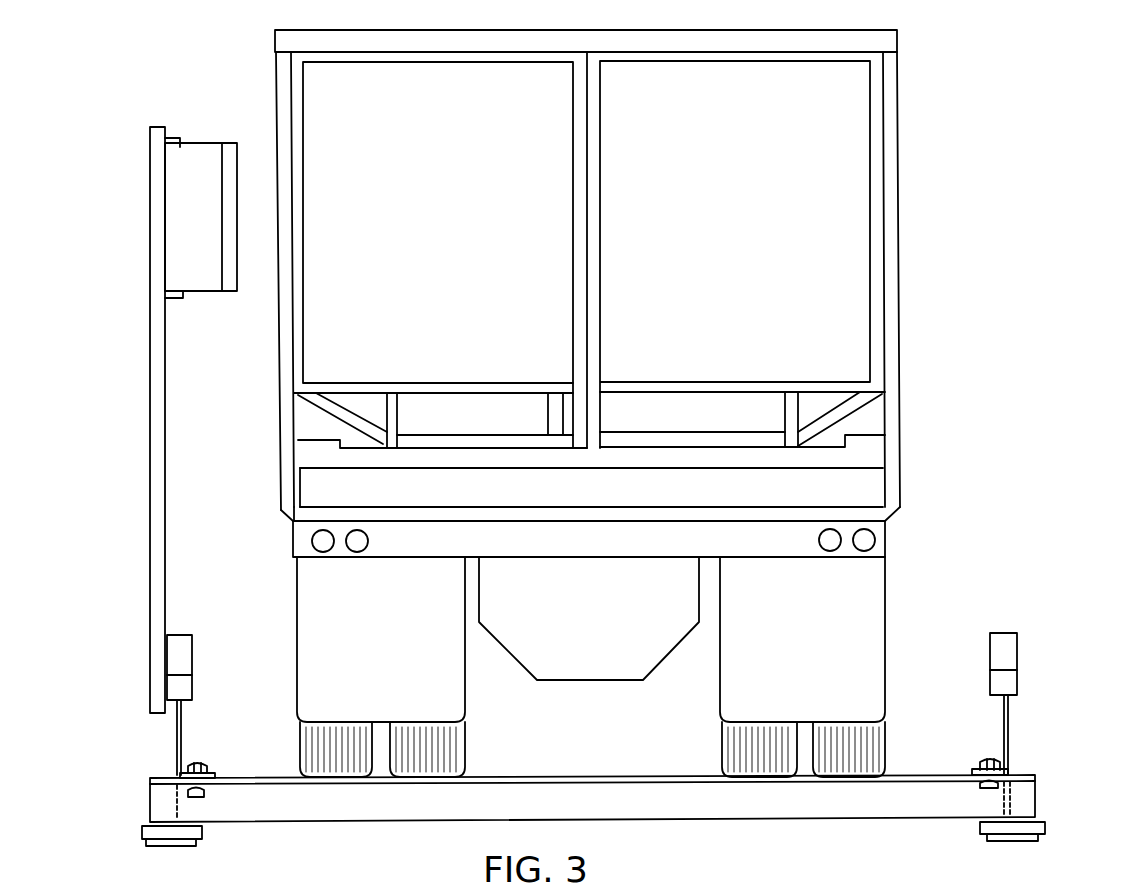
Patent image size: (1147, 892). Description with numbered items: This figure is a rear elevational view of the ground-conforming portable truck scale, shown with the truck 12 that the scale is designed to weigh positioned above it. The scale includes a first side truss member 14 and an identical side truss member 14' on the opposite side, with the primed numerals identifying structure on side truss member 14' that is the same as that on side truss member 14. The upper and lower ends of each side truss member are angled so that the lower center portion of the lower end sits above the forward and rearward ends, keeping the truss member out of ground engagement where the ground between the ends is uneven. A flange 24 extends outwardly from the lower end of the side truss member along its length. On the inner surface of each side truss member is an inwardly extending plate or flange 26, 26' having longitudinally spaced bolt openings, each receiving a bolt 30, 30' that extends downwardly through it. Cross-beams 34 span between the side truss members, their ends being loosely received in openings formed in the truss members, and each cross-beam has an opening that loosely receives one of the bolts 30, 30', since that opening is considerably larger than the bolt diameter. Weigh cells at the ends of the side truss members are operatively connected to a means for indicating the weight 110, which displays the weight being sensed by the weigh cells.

The truck 12 is at (922, 323).
The means for indicating the weight 110 is at (235, 172).
The first side truss member 14 is at (1053, 724).
The side truss member 14' is at (225, 726).
The bolt 30 is at (956, 742).
The bolt 30' is at (230, 751).
The inwardly extending plate or flange 26 is at (949, 751).
The inwardly extending plate or flange 26' is at (237, 756).
The cross-beam 34 is at (567, 777).
The flange 24 is at (1045, 827).